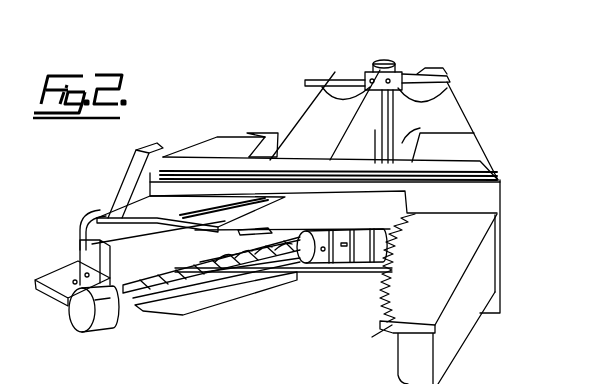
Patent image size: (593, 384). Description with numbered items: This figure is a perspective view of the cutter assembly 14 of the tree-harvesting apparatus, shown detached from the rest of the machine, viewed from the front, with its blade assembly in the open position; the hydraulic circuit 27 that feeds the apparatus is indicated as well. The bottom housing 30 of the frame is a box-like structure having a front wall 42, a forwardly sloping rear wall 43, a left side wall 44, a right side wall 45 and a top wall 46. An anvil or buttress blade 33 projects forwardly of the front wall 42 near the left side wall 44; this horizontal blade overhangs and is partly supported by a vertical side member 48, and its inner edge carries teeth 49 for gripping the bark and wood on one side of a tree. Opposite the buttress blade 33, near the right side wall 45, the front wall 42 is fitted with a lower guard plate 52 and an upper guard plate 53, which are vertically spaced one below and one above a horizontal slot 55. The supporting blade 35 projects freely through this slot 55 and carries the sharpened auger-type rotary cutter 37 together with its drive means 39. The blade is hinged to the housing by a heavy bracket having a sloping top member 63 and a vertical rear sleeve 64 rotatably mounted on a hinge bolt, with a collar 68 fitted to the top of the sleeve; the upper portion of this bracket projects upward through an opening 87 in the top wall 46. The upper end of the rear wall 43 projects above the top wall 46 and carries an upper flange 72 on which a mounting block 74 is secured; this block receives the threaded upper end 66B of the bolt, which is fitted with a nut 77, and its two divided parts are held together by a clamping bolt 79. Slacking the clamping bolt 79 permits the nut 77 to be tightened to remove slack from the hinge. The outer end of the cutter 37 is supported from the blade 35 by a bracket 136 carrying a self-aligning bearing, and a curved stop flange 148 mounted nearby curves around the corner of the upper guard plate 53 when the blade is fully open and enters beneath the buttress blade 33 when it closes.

The cutter assembly 14 is at (227, 114).
The hydraulic circuit 27 is at (277, 383).
The bottom housing 30 is at (146, 143).
The buttress blade 33 is at (386, 328).
The supporting blade 35 is at (64, 268).
The rotary cutter 37 is at (180, 300).
The drive means 39 is at (318, 274).
The front wall 42 is at (470, 203).
The rear wall 43 is at (283, 131).
The left side wall 44 is at (502, 262).
The right side wall 45 is at (205, 145).
The top wall 46 is at (460, 172).
The vertical side member 48 is at (470, 312).
The teeth 49 is at (413, 237).
The lower guard plate 52 is at (207, 303).
The upper guard plate 53 is at (148, 200).
The horizontal slot 55 is at (352, 258).
The sloping top member 63 is at (325, 130).
The vertical rear sleeve 64 is at (393, 123).
The threaded upper end 66B is at (393, 45).
The collar 68 is at (432, 100).
The upper flange 72 is at (436, 70).
The mounting block 74 is at (398, 68).
The nut 77 is at (366, 72).
The clamping bolt 79 is at (332, 92).
The opening 87 is at (462, 128).
The bracket 136 is at (103, 332).
The curved stop flange 148 is at (80, 213).